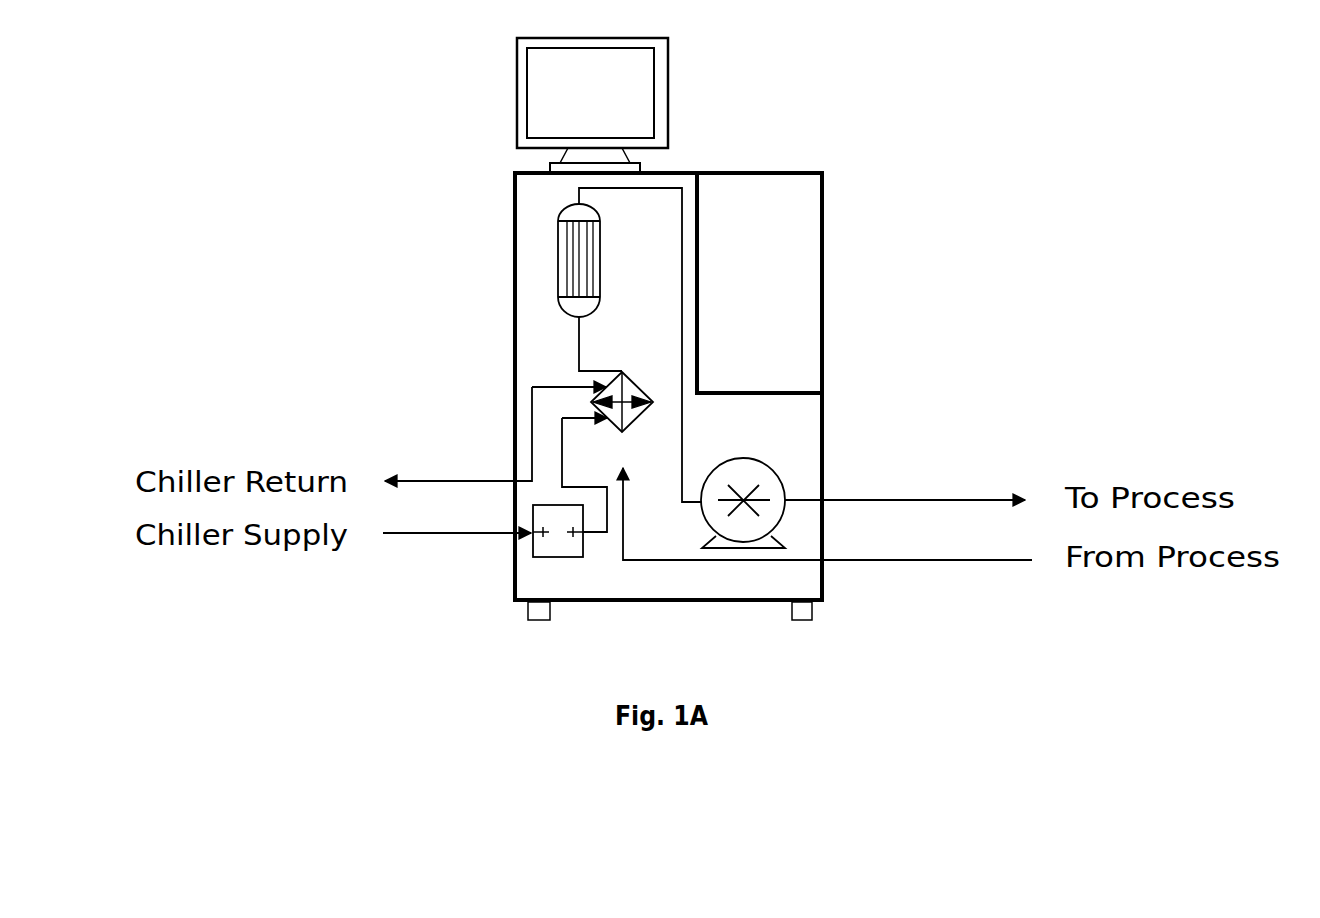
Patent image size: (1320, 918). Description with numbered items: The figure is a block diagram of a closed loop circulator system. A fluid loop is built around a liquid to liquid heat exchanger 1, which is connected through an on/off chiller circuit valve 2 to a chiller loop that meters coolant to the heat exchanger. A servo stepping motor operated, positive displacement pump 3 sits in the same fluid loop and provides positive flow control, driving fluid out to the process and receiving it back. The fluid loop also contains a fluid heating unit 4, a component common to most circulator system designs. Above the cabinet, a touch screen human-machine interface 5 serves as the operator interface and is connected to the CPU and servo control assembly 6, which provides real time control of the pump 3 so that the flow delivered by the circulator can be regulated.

The liquid to liquid heat exchanger 1 is at (638, 380).
The on/off chiller circuit valve 2 is at (560, 558).
The positive displacement pump 3 is at (790, 490).
The fluid heating unit 4 is at (558, 257).
The touch screen human-machine interface 5 is at (517, 105).
The CPU and servo control assembly 6 is at (826, 259).